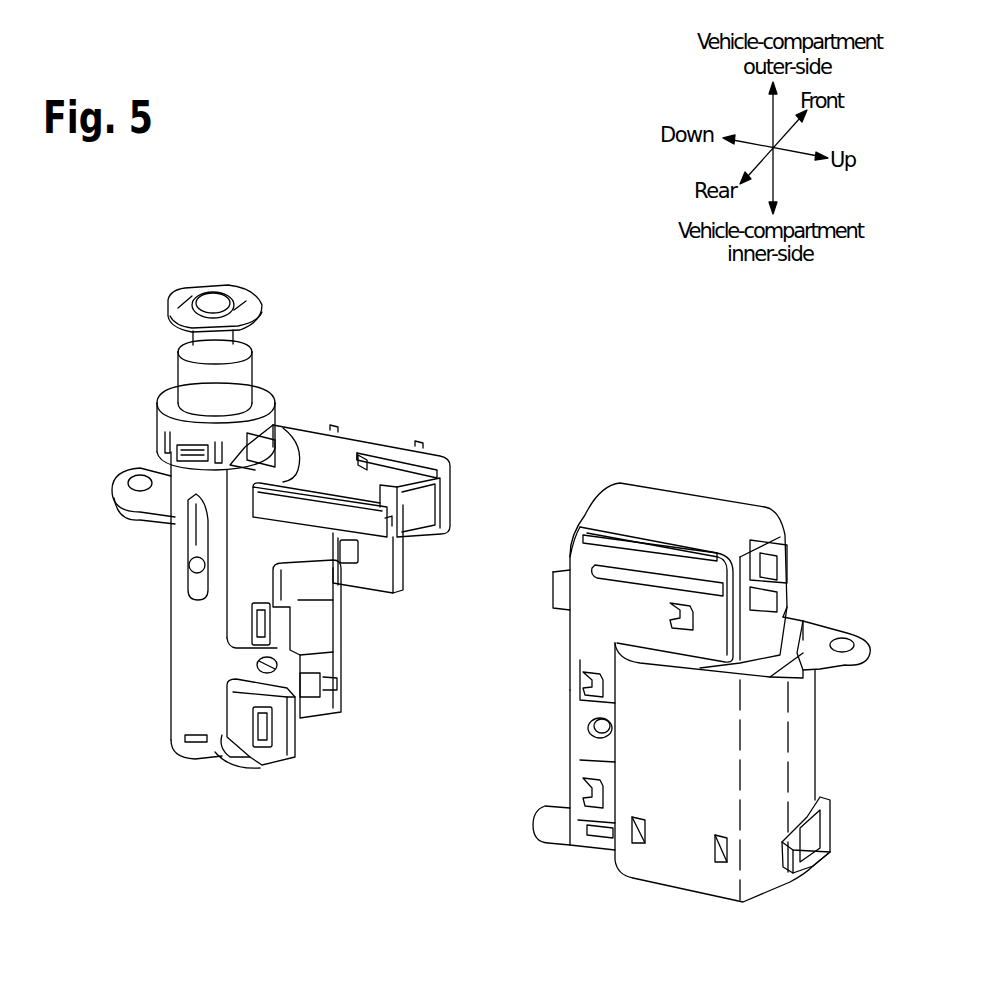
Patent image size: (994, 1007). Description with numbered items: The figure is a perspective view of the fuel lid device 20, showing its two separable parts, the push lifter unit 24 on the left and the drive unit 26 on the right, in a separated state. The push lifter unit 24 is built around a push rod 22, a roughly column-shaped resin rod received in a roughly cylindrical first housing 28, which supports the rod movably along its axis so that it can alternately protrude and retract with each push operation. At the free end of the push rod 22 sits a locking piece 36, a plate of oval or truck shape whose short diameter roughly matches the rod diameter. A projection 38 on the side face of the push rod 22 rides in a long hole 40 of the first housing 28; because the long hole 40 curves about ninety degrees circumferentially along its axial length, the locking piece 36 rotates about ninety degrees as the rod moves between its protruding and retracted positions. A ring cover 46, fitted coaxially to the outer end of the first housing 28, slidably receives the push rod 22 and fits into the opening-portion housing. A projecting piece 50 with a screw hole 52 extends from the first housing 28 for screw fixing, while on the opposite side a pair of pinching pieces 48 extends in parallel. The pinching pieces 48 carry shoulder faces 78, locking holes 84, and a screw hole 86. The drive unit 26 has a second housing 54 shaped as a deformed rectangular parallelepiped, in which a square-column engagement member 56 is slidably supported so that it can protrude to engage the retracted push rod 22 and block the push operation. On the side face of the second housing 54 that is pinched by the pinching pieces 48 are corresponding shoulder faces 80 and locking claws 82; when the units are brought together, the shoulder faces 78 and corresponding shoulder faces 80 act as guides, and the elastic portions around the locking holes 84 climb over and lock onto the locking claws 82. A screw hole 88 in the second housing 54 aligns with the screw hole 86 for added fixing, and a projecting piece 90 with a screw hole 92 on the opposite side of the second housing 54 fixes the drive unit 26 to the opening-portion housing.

The fuel lid device 20 is at (510, 290).
The push lifter unit 24 is at (480, 358).
The drive unit 26 is at (622, 382).
The locking piece 36 is at (182, 296).
The push rod 22 is at (188, 337).
The ring cover 46 is at (160, 418).
The screw hole 52 is at (140, 480).
The projecting piece 50 is at (115, 504).
The long hole 40 is at (178, 557).
The projection 38 is at (190, 569).
The first housing 28 is at (185, 658).
The screw hole 86 is at (258, 668).
The pinching pieces 48 is at (420, 530).
The shoulder faces 78 is at (378, 590).
The locking holes 84 is at (352, 532).
The engagement member 56 is at (558, 590).
The second housing 54 is at (680, 873).
The projecting piece 90 is at (820, 630).
The screw hole 92 is at (845, 642).
The locking claws 82 is at (690, 608).
The corresponding shoulder faces 80 is at (620, 648).
The screw hole 88 is at (606, 848).